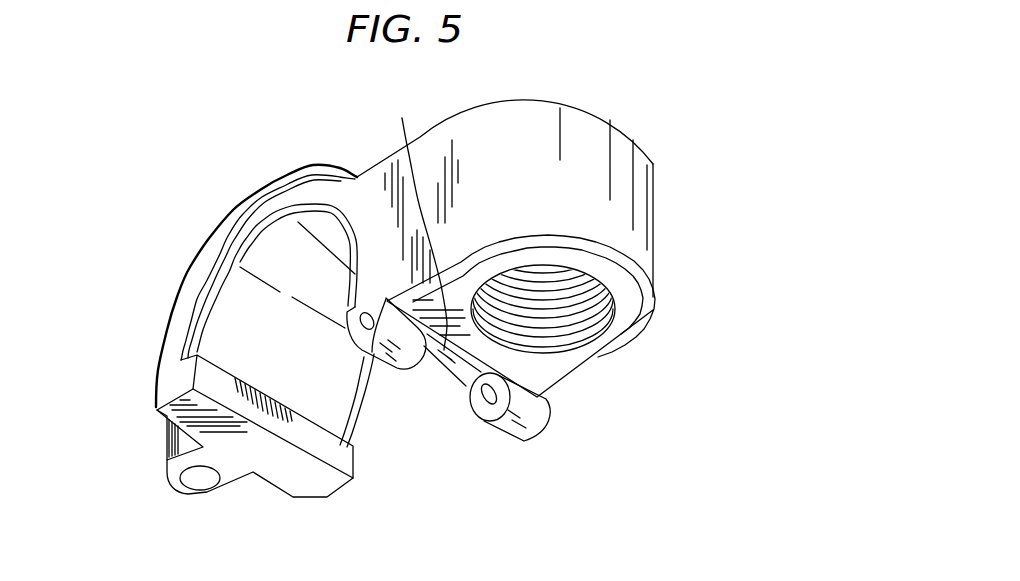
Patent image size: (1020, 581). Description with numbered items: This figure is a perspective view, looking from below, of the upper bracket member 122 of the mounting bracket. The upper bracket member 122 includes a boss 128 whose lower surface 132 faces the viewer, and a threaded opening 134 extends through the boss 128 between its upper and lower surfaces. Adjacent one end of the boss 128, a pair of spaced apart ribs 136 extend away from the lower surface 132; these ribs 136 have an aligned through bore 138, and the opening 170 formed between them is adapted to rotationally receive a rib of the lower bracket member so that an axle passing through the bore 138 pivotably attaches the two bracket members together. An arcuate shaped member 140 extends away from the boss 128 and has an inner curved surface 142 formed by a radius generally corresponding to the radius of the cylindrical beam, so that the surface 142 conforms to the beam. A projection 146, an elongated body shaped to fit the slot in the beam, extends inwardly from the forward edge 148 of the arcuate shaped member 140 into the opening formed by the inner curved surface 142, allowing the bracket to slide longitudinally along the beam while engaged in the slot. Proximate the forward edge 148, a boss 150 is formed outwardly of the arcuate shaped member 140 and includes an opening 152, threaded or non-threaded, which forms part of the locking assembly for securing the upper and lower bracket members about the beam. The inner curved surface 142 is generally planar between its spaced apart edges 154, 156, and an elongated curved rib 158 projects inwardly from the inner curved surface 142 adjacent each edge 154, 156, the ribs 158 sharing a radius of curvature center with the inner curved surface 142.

The upper bracket member 122 is at (525, 101).
The boss 128 is at (638, 157).
The lower surface 132 is at (575, 367).
The threaded opening 134 is at (586, 310).
The spaced apart ribs 136 is at (392, 352).
The through bore 138 is at (367, 313).
The arcuate shaped member 140 is at (212, 235).
The inner curved surface 142 is at (277, 250).
The projection 146 is at (335, 453).
The forward edge 148 is at (157, 410).
The boss 150 is at (166, 462).
The opening 152 is at (205, 480).
The edge 154 is at (190, 293).
The edge 156 is at (355, 428).
The elongated curved rib 158 is at (255, 232).
The opening 170 is at (416, 221).